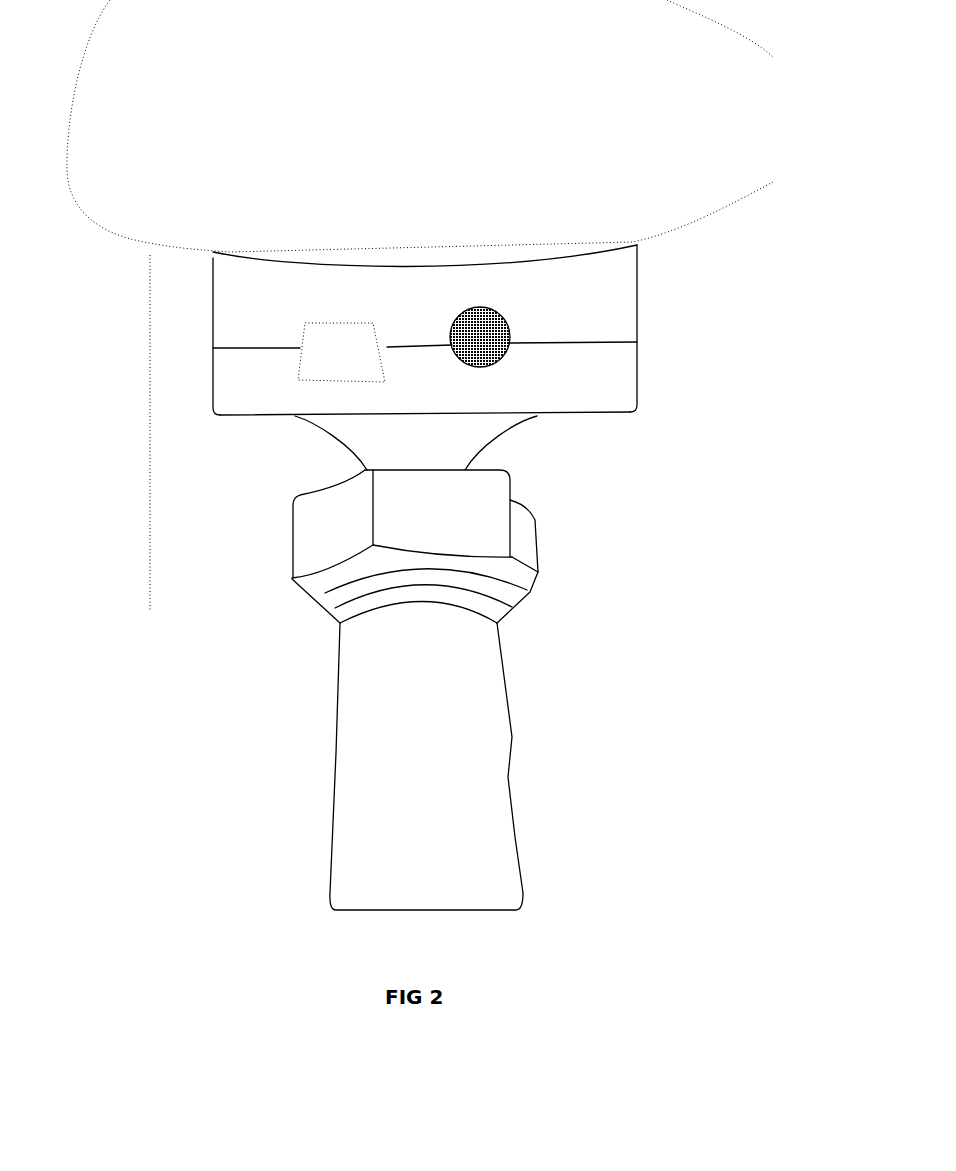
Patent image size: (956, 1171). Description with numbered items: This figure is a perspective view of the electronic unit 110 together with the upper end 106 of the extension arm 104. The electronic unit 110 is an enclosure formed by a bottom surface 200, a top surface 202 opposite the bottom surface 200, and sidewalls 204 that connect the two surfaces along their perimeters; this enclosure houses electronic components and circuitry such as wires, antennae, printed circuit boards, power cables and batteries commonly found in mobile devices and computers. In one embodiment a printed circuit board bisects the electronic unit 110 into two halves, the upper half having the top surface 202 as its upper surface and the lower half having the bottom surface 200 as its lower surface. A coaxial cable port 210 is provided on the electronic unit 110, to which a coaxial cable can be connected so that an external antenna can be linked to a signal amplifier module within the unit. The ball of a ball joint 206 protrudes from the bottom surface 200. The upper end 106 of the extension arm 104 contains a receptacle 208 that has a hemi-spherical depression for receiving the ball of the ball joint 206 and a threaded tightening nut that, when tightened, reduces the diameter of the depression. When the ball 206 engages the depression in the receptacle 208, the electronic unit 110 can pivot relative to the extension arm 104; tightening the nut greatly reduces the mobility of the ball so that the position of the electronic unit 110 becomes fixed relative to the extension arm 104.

The electronic unit 110 is at (690, 210).
The top surface 202 is at (438, 253).
The sidewalls 204 is at (212, 310).
The bottom surface 200 is at (563, 413).
The ball joint 206 is at (338, 442).
The coaxial cable port 210 is at (500, 364).
The receptacle 208 is at (527, 561).
The upper end 106 is at (318, 660).
The extension arm 104 is at (517, 838).